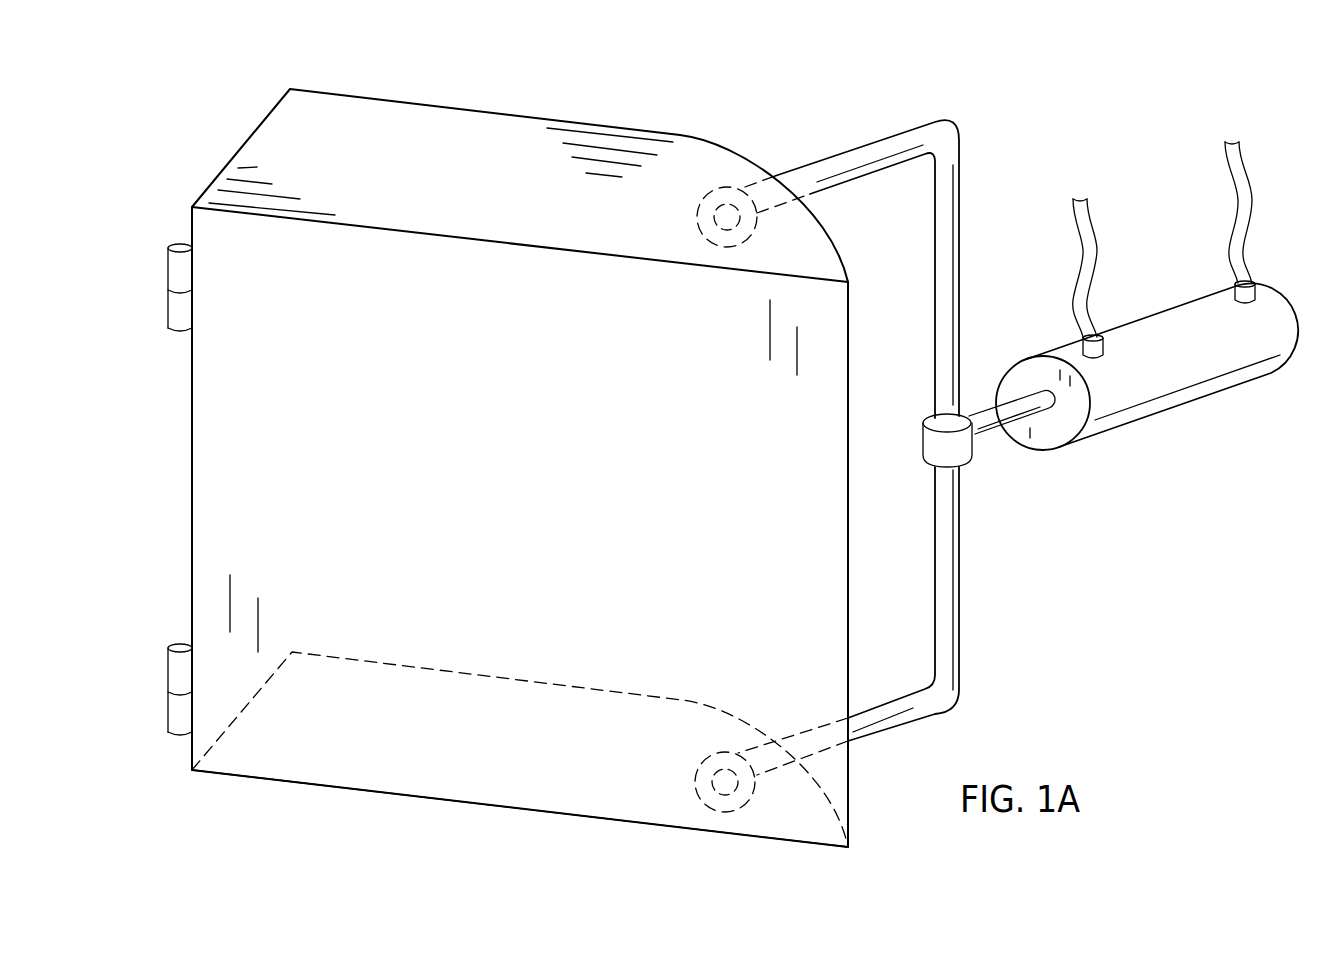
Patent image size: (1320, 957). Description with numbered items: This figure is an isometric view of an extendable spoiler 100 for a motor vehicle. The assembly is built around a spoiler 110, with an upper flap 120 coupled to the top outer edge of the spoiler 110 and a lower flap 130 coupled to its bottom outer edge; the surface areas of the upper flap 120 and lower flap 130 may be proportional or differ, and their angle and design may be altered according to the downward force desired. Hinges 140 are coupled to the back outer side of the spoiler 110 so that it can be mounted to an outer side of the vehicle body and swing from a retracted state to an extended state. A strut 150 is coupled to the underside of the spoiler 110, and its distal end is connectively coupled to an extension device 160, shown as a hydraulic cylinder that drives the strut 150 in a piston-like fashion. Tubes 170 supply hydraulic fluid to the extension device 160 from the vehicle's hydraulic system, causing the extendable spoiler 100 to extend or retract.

The extendable spoiler 100 is at (228, 817).
The spoiler 110 is at (243, 490).
The upper flap 120 is at (540, 148).
The lower flap 130 is at (587, 797).
The hinges 140 is at (172, 272).
The strut 150 is at (952, 152).
The extension device 160 is at (1200, 393).
The tubes 170 is at (1232, 163).